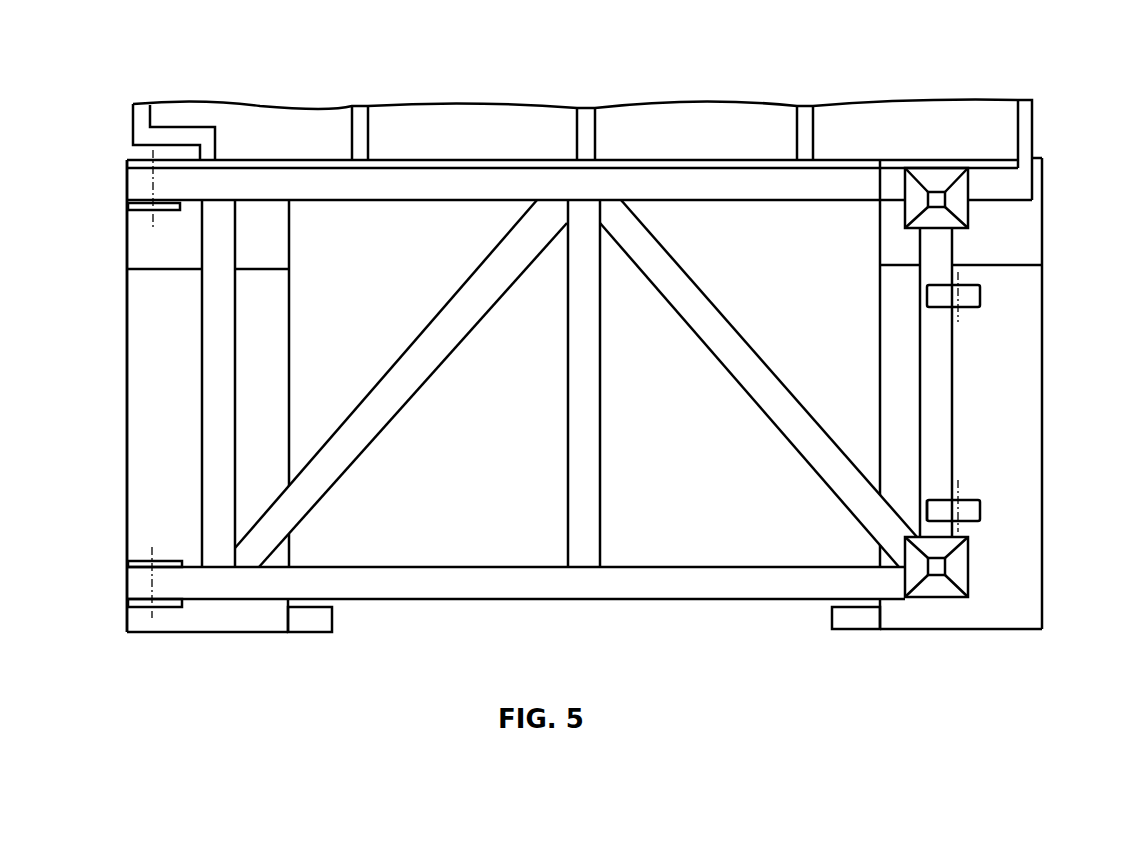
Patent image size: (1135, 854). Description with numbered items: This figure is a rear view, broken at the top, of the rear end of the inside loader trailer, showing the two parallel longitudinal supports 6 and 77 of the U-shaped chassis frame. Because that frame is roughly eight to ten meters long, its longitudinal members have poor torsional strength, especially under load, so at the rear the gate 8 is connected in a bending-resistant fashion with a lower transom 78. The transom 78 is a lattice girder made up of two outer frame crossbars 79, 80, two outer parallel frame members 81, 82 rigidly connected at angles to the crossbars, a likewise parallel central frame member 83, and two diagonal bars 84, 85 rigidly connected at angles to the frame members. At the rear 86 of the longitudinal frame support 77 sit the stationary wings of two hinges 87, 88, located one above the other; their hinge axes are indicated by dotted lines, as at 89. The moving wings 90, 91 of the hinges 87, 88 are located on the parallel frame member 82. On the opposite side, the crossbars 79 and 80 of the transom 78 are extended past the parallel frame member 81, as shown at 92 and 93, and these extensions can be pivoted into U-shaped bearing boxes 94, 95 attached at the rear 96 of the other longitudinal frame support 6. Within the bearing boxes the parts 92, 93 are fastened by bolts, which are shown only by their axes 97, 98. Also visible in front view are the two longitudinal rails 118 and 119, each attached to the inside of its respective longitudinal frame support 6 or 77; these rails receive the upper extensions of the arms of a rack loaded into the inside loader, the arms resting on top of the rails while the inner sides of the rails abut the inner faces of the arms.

The longitudinal support 6 is at (119, 405).
The gate 8 is at (982, 118).
The longitudinal support 77 is at (1052, 499).
The lower transom 78 is at (988, 363).
The outer frame crossbar 79 is at (723, 190).
The outer frame crossbar 80 is at (700, 585).
The outer parallel frame member 81 is at (222, 362).
The outer parallel frame member 82 is at (930, 350).
The central frame member 83 is at (588, 438).
The diagonal bar 84 is at (403, 393).
The diagonal bar 85 is at (775, 403).
The rear of longitudinal frame support 86 is at (1003, 623).
The hinge 87 is at (982, 293).
The hinge 88 is at (982, 513).
The hinge axis 89 is at (958, 488).
The moving wing of hinge 90 is at (932, 508).
The moving wing of hinge 91 is at (930, 295).
The crossbar extension 92 is at (185, 183).
The crossbar extension 93 is at (188, 588).
The U-shaped bearing box 94 is at (125, 603).
The U-shaped bearing box 95 is at (125, 207).
The rear of longitudinal frame support 96 is at (142, 457).
The bolt axis 97 is at (148, 157).
The bolt axis 98 is at (150, 550).
The longitudinal rail 118 is at (320, 630).
The longitudinal rail 119 is at (848, 623).